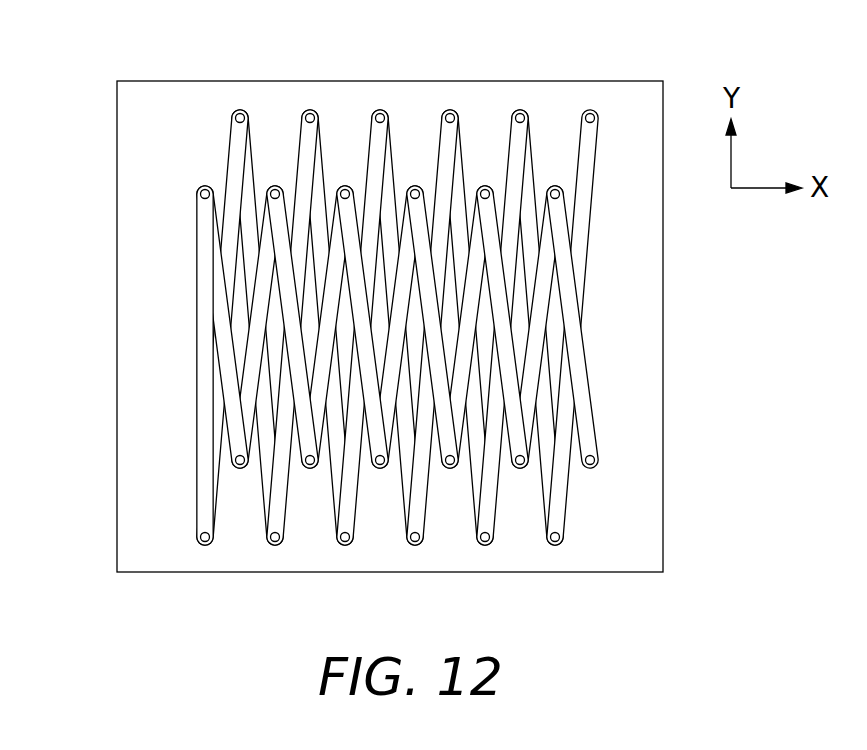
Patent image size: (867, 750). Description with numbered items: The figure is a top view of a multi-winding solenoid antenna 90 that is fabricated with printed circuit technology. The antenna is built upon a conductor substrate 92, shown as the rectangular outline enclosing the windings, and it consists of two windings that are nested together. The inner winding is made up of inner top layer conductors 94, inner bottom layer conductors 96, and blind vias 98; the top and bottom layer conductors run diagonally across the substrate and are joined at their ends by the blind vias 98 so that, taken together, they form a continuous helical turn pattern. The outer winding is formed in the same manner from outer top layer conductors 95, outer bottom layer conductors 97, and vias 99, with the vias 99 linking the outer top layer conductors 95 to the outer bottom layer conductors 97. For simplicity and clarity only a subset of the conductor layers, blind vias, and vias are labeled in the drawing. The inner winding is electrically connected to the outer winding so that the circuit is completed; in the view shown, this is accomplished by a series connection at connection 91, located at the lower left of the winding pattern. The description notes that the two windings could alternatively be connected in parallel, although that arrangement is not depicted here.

The solenoid antenna 90 is at (63, 113).
The connection 91 is at (203, 547).
The conductor substrate 92 is at (663, 385).
The inner top layer conductors 94 is at (285, 212).
The outer top layer conductors 95 is at (510, 147).
The inner bottom layer conductors 96 is at (250, 430).
The outer bottom layer conductors 97 is at (545, 509).
The blind vias 98 is at (272, 188).
The vias 99 is at (415, 546).